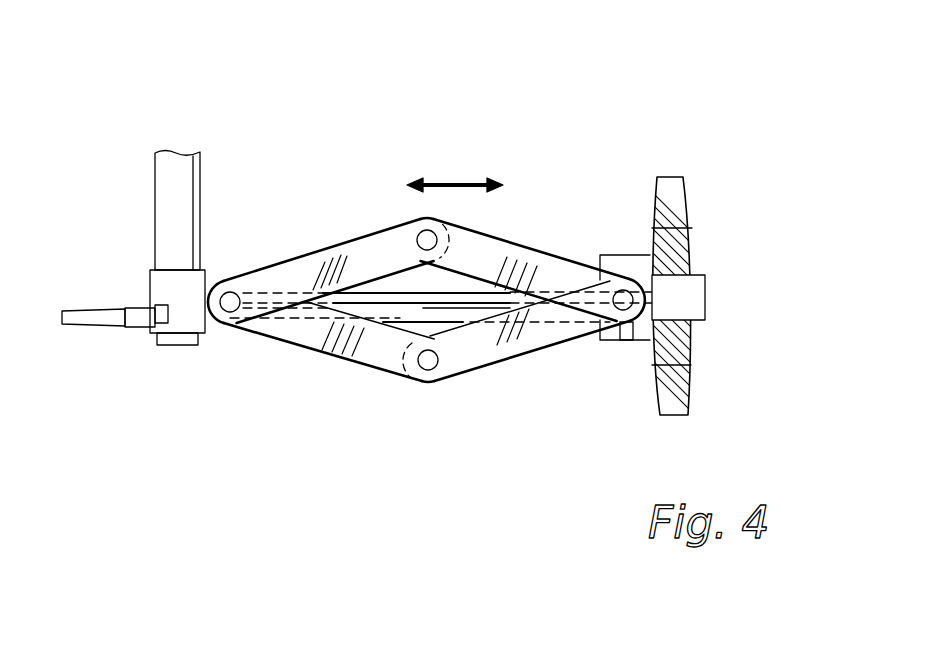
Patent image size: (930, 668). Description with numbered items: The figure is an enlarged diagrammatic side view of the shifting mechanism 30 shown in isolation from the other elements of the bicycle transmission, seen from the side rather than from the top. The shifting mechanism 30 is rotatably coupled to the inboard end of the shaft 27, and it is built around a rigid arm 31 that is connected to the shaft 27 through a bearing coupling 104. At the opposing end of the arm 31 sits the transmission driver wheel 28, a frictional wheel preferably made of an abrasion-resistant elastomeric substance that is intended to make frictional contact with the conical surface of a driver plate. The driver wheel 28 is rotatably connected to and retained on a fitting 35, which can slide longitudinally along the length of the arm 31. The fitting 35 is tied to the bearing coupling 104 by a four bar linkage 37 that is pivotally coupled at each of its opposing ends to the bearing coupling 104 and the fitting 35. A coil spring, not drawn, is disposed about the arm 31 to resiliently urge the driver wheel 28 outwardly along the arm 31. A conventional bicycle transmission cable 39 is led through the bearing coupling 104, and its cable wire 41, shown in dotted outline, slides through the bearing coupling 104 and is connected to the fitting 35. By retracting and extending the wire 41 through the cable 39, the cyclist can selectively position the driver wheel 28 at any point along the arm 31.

The shaft 27 is at (185, 205).
The transmission driver wheel 28 is at (690, 203).
The shifting mechanism 30 is at (408, 147).
The rigid arm 31 is at (390, 300).
The fitting 35 is at (623, 252).
The four bar linkage 37 is at (530, 258).
The bicycle transmission cable 39 is at (105, 324).
The cable wire 41 is at (537, 325).
The bearing coupling 104 is at (195, 320).